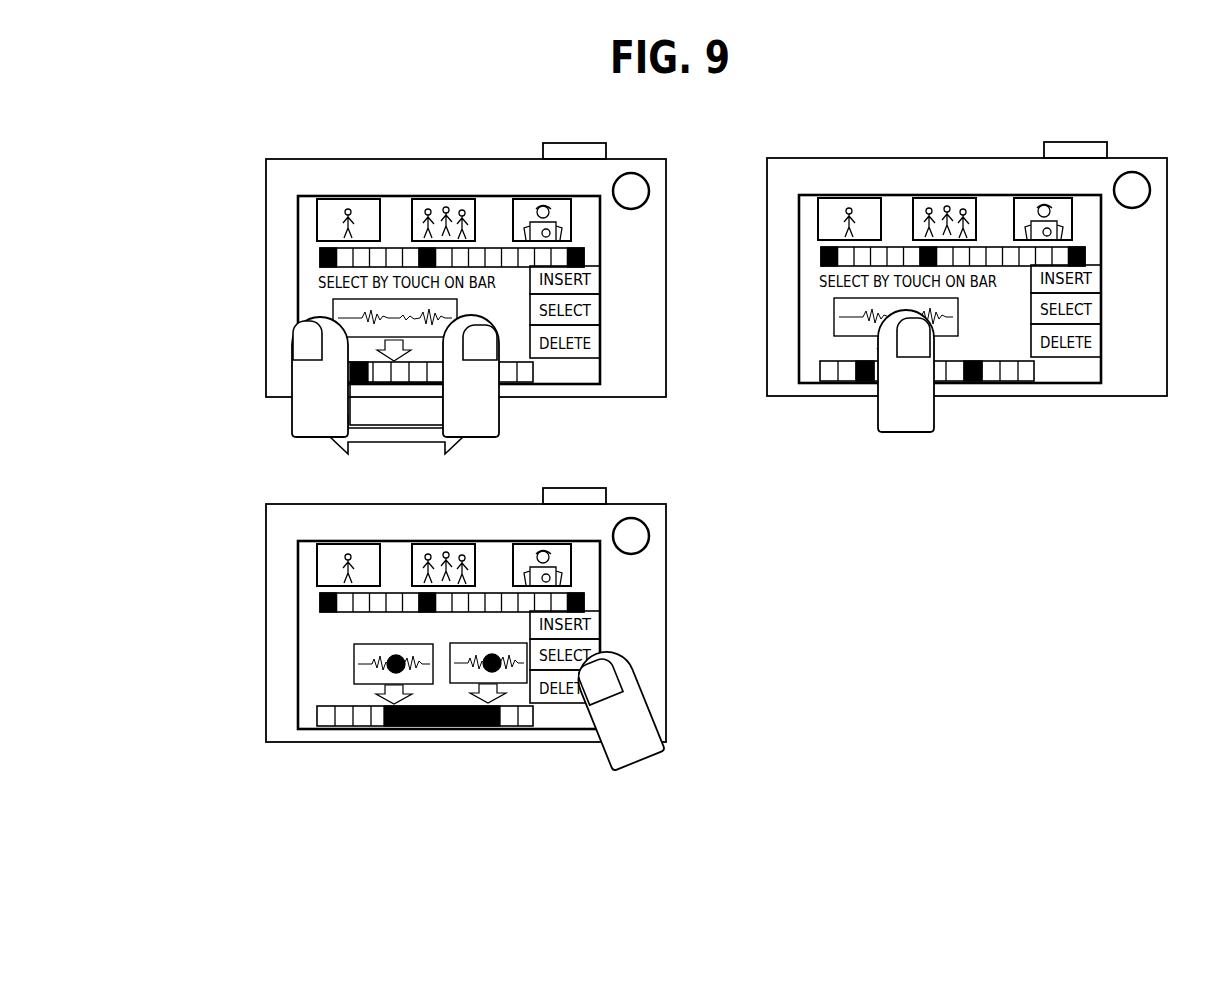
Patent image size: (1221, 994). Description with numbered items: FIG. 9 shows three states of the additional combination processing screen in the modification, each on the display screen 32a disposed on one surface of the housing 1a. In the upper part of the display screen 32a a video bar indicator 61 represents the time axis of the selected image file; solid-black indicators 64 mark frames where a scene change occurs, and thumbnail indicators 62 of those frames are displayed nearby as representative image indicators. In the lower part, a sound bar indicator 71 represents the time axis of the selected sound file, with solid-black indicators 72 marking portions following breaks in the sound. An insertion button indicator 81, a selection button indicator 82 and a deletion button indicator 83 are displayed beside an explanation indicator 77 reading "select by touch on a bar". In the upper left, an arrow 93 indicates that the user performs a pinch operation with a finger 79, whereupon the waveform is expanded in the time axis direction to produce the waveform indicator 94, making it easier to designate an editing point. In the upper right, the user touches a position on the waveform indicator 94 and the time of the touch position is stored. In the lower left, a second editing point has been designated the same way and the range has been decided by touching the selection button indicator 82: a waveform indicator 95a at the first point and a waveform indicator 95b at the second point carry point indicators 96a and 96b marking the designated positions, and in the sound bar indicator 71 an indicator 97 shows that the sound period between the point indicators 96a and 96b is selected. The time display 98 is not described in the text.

The housing 1a is at (330, 158).
The display screen 32a is at (309, 196).
The video bar indicator 61 is at (500, 250).
The thumbnail indicators 62 is at (454, 198).
The indicators 64 is at (320, 252).
The sound bar indicator 71 is at (521, 385).
The indicators 72 is at (362, 385).
The explanation indicator 77 is at (316, 283).
The finger 79 is at (307, 334).
The insertion button indicator 81 is at (600, 279).
The selection button indicator 82 is at (600, 312).
The deletion button indicator 83 is at (600, 344).
The arrow 93 is at (390, 448).
The waveform indicator 94 is at (333, 308).
The waveform indicator 95a is at (355, 672).
The waveform indicator 95b is at (472, 683).
The point indicator 96a is at (390, 673).
The point indicator 96b is at (500, 672).
The indicator 97 is at (422, 728).
The time display 98 is at (405, 630).